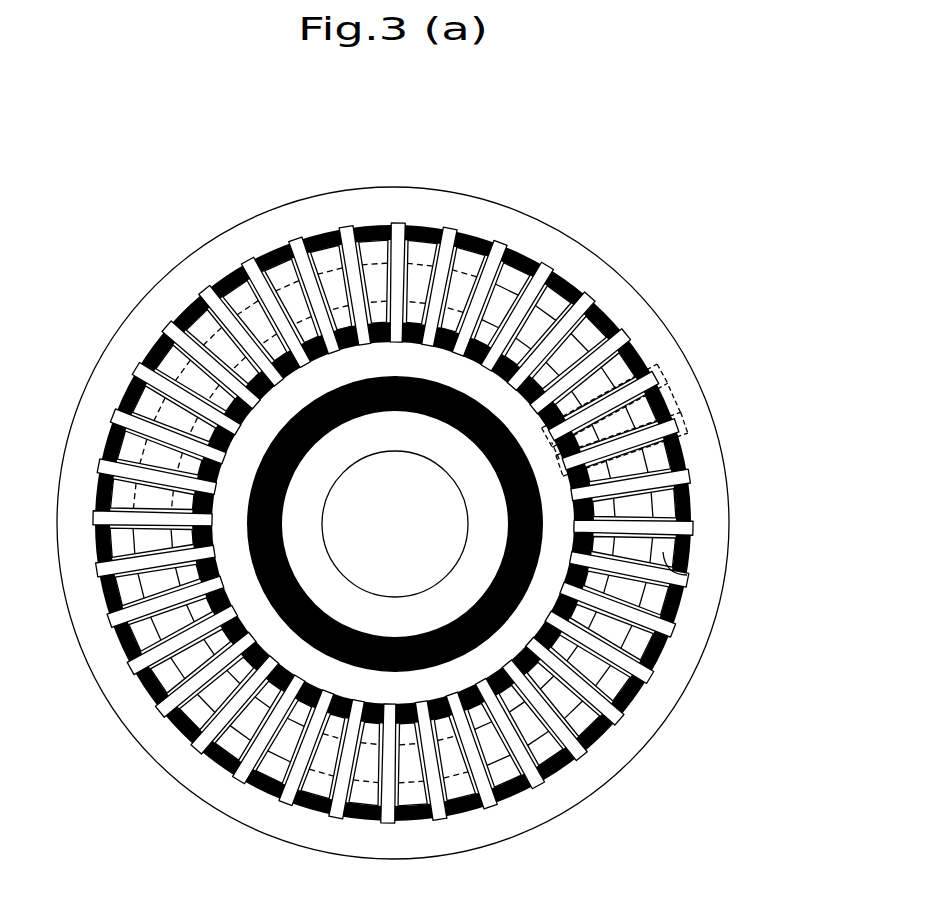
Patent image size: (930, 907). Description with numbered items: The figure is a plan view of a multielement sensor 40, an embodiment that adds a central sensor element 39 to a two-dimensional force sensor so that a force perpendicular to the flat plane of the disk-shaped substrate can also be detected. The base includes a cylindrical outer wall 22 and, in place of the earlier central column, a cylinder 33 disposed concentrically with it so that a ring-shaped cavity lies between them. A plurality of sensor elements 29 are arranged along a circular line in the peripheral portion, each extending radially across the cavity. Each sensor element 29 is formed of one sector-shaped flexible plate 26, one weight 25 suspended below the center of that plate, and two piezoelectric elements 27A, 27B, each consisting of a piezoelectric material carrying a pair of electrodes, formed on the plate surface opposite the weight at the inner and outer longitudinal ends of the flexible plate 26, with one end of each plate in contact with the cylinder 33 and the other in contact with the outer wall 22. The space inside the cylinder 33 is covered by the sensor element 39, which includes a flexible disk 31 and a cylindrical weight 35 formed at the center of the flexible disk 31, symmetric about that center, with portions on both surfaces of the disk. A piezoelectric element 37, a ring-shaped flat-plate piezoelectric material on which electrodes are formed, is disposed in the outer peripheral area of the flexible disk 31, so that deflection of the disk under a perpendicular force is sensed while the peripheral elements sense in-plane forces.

The outer wall 22 is at (655, 707).
The weight 25 is at (628, 583).
The flexible plate 26 is at (692, 573).
The piezoelectric element 27A is at (693, 524).
The piezoelectric element 27B is at (695, 490).
The sensor element 29 is at (677, 393).
The flexible disk 31 is at (395, 524).
The cylinder 33 is at (452, 523).
The weight 35 is at (410, 536).
The piezoelectric element 37 is at (510, 537).
The sensor element 39 is at (453, 380).
The multielement sensor 40 is at (430, 532).